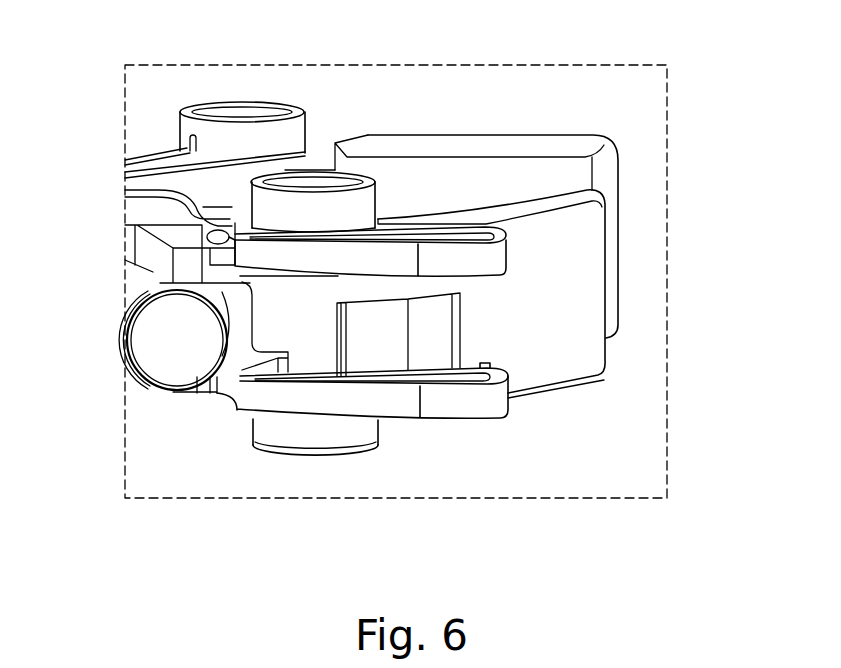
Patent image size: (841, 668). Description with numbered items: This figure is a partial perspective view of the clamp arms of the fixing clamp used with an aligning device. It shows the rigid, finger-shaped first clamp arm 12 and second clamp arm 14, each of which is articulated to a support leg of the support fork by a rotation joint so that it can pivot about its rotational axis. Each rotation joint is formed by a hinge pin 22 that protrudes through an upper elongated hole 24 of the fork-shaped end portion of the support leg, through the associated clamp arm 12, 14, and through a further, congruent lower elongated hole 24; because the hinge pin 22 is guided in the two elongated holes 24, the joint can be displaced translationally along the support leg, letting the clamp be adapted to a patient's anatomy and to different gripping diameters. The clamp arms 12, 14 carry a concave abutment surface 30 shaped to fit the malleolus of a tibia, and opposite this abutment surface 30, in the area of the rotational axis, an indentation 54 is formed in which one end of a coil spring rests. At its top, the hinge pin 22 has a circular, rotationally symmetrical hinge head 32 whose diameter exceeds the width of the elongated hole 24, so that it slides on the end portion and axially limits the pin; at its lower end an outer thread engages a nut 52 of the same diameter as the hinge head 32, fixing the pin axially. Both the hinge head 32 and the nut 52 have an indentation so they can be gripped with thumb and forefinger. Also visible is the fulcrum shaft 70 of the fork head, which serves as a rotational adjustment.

The first clamp arm 12 is at (577, 347).
The second clamp arm 14 is at (580, 179).
The hinge pin 22 is at (191, 100).
The elongated hole 24 is at (447, 247).
The concave abutment surface 30 is at (443, 178).
The hinge head 32 is at (313, 433).
The nut 52 is at (308, 210).
The indentation 54 is at (367, 335).
The fulcrum shaft 70 is at (158, 372).